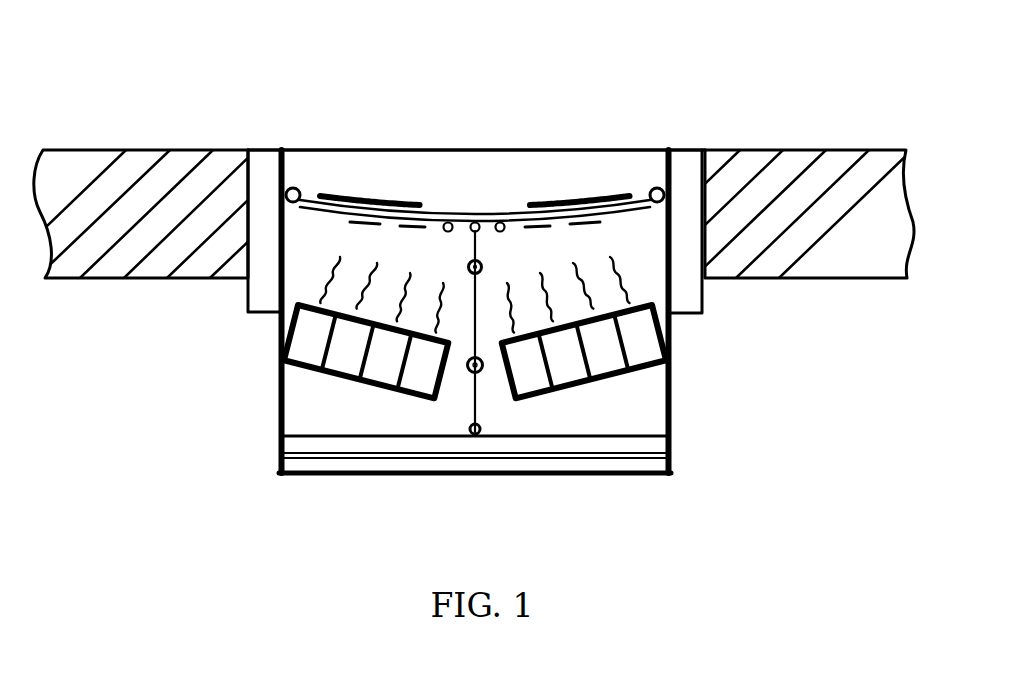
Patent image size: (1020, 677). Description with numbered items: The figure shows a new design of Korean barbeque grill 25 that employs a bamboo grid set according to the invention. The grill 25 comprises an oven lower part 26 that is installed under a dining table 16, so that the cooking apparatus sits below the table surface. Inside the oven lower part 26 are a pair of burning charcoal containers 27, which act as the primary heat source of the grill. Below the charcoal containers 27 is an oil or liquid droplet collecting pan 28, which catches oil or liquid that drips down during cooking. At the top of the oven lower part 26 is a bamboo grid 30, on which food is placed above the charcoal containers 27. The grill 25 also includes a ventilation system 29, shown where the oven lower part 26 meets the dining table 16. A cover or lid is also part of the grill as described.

The dining table 16 is at (124, 150).
The Korean barbeque grill 25 is at (383, 70).
The oven lower part 26 is at (672, 394).
The burning charcoal container 27 is at (350, 383).
The oil or liquid droplet collecting pan 28 is at (672, 442).
The ventilation system 29 is at (258, 150).
The bamboo grid 30 is at (498, 213).